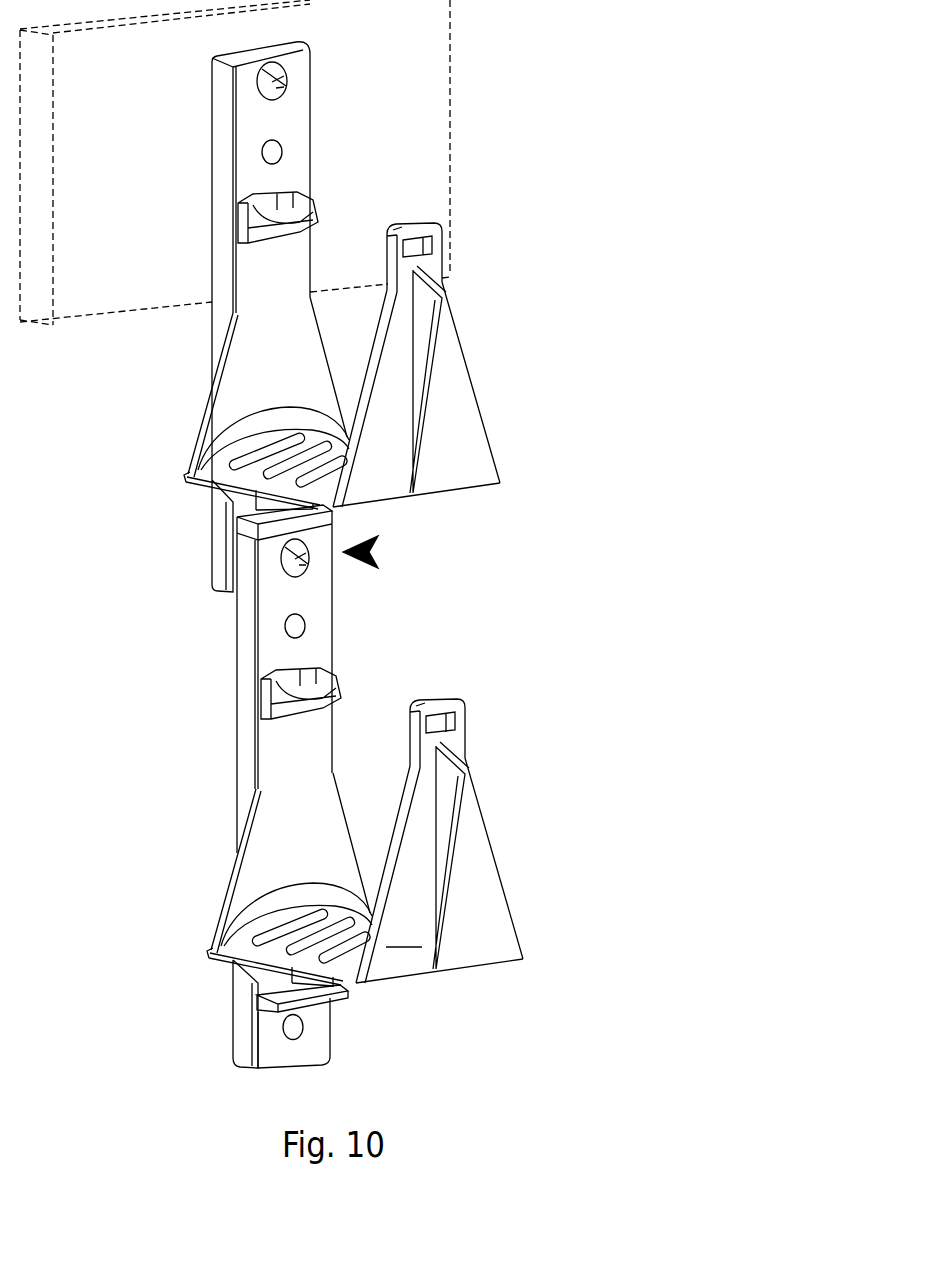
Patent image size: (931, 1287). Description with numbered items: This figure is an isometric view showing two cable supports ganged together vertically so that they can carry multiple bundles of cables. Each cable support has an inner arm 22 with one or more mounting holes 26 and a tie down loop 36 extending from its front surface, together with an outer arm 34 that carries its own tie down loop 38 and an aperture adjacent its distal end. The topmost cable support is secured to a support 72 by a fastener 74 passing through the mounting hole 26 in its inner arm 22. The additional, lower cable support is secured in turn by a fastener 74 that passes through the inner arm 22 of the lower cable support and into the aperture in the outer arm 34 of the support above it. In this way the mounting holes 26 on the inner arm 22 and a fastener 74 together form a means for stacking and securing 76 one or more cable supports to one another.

The inner arm 22 is at (227, 135).
The mounting hole 26 is at (299, 1030).
The outer arm 34 is at (404, 931).
The tie down loop 36 is at (257, 214).
The tie down loop 38 is at (414, 231).
The support 72 is at (450, 123).
The fastener 74 is at (288, 79).
The means for stacking and securing 76 is at (372, 553).